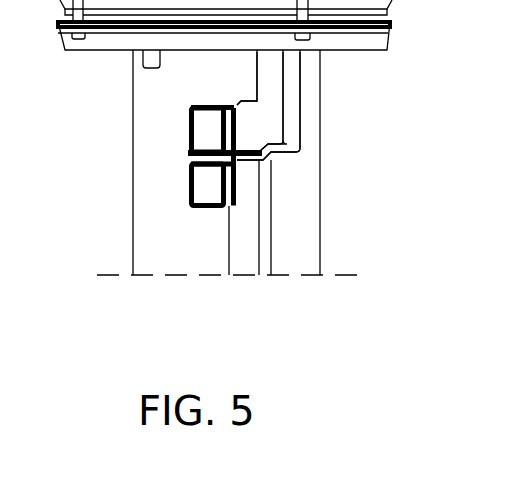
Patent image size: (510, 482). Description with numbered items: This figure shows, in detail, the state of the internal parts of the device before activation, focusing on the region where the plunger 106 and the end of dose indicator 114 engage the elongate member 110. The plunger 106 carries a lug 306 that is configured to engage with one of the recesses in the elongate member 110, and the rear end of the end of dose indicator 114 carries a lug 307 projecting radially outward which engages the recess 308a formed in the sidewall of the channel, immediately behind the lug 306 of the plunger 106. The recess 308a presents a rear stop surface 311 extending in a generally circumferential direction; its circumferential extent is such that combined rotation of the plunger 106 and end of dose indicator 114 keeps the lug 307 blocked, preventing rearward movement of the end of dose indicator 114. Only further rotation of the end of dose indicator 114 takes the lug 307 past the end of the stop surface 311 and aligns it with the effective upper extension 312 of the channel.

The plunger 106 is at (248, 260).
The elongate member 110 is at (307, 220).
The end of dose indicator 114 is at (267, 130).
The lug 306 is at (202, 192).
The lug 307 is at (208, 128).
The recess 308a is at (203, 155).
The rear stop surface 311 is at (243, 103).
The upper extension of the channel 312 is at (270, 83).